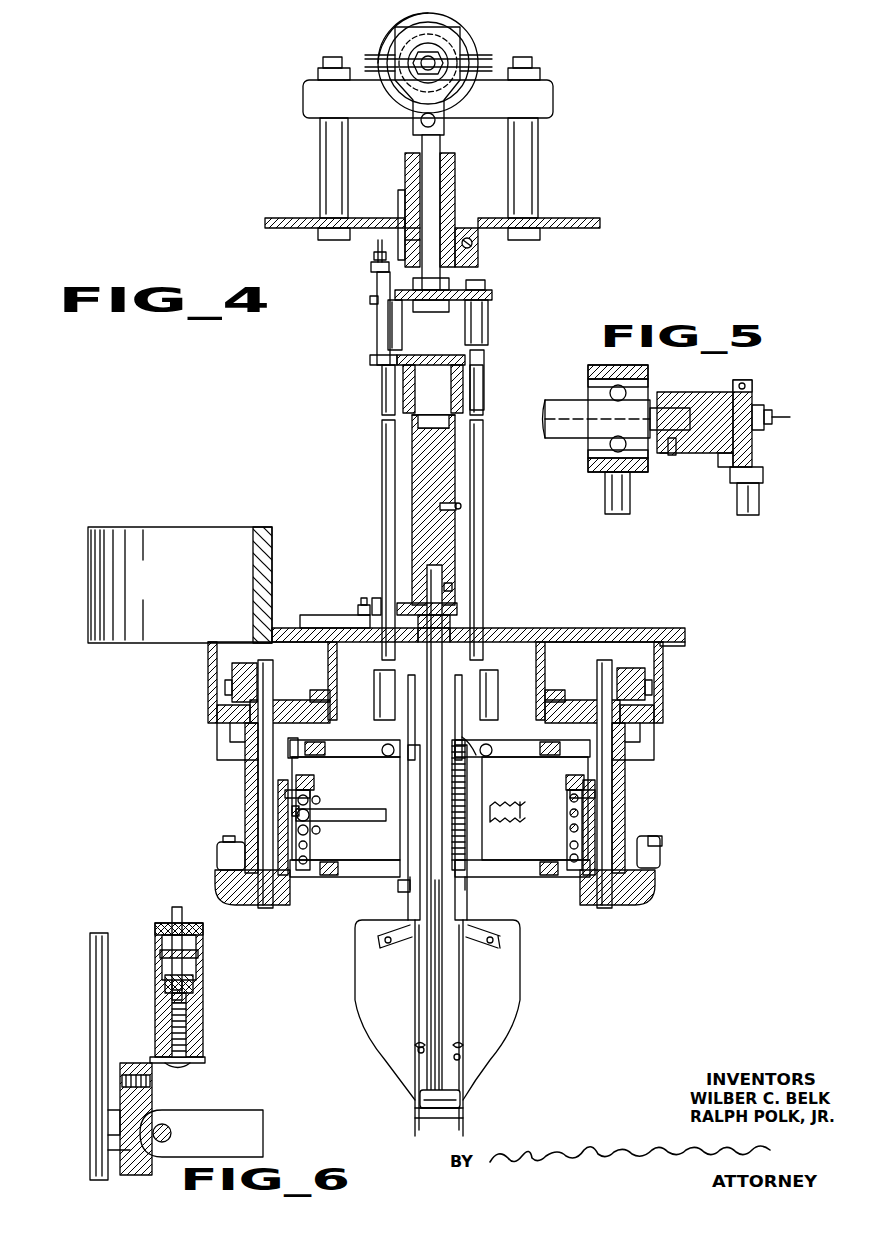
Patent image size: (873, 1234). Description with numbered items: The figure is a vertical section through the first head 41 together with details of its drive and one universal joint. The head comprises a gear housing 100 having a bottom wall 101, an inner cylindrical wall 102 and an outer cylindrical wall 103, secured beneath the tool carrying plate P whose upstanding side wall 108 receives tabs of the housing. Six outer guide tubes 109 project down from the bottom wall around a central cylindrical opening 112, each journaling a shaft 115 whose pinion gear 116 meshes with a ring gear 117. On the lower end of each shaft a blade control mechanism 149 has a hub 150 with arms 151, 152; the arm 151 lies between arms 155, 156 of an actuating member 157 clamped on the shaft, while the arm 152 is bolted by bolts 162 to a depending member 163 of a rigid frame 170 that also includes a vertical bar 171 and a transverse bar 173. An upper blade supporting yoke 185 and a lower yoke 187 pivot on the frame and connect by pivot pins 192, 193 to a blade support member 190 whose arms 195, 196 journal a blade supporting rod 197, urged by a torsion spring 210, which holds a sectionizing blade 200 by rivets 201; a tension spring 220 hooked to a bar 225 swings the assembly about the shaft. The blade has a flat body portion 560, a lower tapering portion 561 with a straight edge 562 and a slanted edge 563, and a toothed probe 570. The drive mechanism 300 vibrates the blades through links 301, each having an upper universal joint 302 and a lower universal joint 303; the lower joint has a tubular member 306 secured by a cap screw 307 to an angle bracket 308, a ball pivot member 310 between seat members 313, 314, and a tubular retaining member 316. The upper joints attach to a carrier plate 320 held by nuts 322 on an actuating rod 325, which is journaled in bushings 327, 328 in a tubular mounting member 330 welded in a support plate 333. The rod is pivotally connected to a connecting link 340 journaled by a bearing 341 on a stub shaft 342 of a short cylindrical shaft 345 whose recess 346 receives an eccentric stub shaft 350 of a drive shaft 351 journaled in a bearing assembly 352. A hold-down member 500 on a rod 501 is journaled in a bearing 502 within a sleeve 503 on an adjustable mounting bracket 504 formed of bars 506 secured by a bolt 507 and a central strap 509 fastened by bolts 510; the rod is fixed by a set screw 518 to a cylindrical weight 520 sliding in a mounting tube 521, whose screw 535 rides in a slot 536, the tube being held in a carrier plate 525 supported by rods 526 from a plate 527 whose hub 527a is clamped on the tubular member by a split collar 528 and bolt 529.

In FIG. 4, the drive mechanism 300 is at (470, 46).
In FIG. 5, the drive mechanism 300 is at (668, 390).
In FIG. 4, the bearing 341 is at (415, 80).
In FIG. 5, the bearing 341 is at (756, 408).
In FIG. 4, the bearing assembly 352 is at (368, 38).
In FIG. 5, the bearing assembly 352 is at (612, 370).
In FIG. 4, the connecting link 340 is at (446, 101).
In FIG. 5, the connecting link 340 is at (754, 453).
In FIG. 4, the support plate 333 is at (278, 220).
In FIG. 4, the actuating rod 325 is at (441, 172).
In FIG. 5, the actuating rod 325 is at (762, 500).
In FIG. 4, the bushing 327 is at (412, 170).
In FIG. 4, the tubular mounting member 330 is at (404, 192).
In FIG. 4, the bushing 328 is at (410, 240).
In FIG. 4, the split collar 528 is at (480, 262).
In FIG. 4, the bolt 529 is at (475, 245).
In FIG. 4, the hub 527a is at (374, 257).
In FIG. 4, the plate 527 is at (371, 268).
In FIG. 4, the carrier plate 320 is at (493, 294).
In FIG. 4, the nuts 322 is at (370, 298).
In FIG. 4, the rods 526 is at (377, 326).
In FIG. 4, the universal joint 302 is at (388, 314).
In FIG. 4, the carrier plate 525 is at (372, 360).
In FIG. 4, the slot 536 is at (455, 440).
In FIG. 4, the link 301 is at (382, 488).
In FIG. 6, the link 301 is at (172, 914).
In FIG. 4, the mounting tube 521 is at (412, 440).
In FIG. 4, the cylindrical weight 520 is at (448, 530).
In FIG. 4, the screw 535 is at (460, 506).
In FIG. 4, the universal joint 303 is at (425, 672).
In FIG. 6, the universal joint 303 is at (203, 972).
In FIG. 4, the set screw 518 is at (452, 588).
In FIG. 4, the central strap 509 is at (458, 610).
In FIG. 4, the sleeve 503 is at (452, 622).
In FIG. 4, the bearing 502 is at (452, 636).
In FIG. 4, the bars 506 is at (342, 620).
In FIG. 4, the bolt 507 is at (364, 606).
In FIG. 4, the bolts 510 is at (364, 598).
In FIG. 4, the adjustable mounting bracket 504 is at (376, 596).
In FIG. 4, the upstanding side wall 108 is at (196, 576).
In FIG. 4, the tool carrying plate P is at (682, 630).
In FIG. 4, the gear housing 100 is at (206, 687).
In FIG. 4, the outer cylindrical wall 103 is at (212, 700).
In FIG. 4, the pinion gear 116 is at (240, 673).
In FIG. 4, the inner cylindrical wall 102 is at (333, 676).
In FIG. 4, the ring gear 117 is at (330, 694).
In FIG. 4, the pivot pin 192 is at (410, 700).
In FIG. 6, the pivot pin 192 is at (168, 1125).
In FIG. 4, the blade supporting rod 197 is at (405, 716).
In FIG. 6, the blade supporting rod 197 is at (90, 1077).
In FIG. 4, the shaft 115 is at (266, 664).
In FIG. 4, the outer guide tube 109 is at (246, 752).
In FIG. 4, the bottom wall 101 is at (238, 732).
In FIG. 4, the hub 150 is at (278, 830).
In FIG. 4, the blade control mechanism 149 is at (242, 820).
In FIG. 4, the actuating member 157 is at (258, 900).
In FIG. 4, the arm 151 is at (224, 858).
In FIG. 4, the arm 155 is at (230, 842).
In FIG. 4, the arm 156 is at (662, 843).
In FIG. 4, the upper blade supporting yoke 185 is at (370, 765).
In FIG. 6, the upper blade supporting yoke 185 is at (262, 1106).
In FIG. 4, the lower yoke 187 is at (352, 875).
In FIG. 4, the vertical bar 171 is at (300, 748).
In FIG. 4, the blade support member 190 is at (395, 850).
In FIG. 6, the blade support member 190 is at (108, 1156).
In FIG. 4, the transverse bar 173 is at (296, 781).
In FIG. 4, the depending member 163 is at (300, 797).
In FIG. 4, the rigid frame 170 is at (320, 777).
In FIG. 4, the arm 195 is at (322, 792).
In FIG. 6, the arm 195 is at (120, 1098).
In FIG. 4, the arm 152 is at (322, 808).
In FIG. 4, the bar 225 is at (358, 822).
In FIG. 4, the tension spring 220 is at (322, 818).
In FIG. 4, the torsion spring 210 is at (465, 788).
In FIG. 4, the bolts 162 is at (310, 840).
In FIG. 4, the central cylindrical opening 112 is at (480, 748).
In FIG. 4, the pivot pin 193 is at (407, 880).
In FIG. 4, the arm 196 is at (404, 892).
In FIG. 4, the first head 41 is at (701, 681).
In FIG. 4, the rivets 201 is at (400, 940).
In FIG. 4, the flat body portion 560 is at (356, 970).
In FIG. 4, the sectionizing blade 200 is at (402, 993).
In FIG. 4, the rod 501 is at (442, 997).
In FIG. 4, the lower tapering portion 561 is at (395, 1040).
In FIG. 4, the straight edge 562 is at (418, 1050).
In FIG. 4, the slanted edge 563 is at (400, 1070).
In FIG. 4, the hold-down member 500 is at (460, 1100).
In FIG. 4, the toothed probe 570 is at (415, 1117).
In FIG. 5, the drive shaft 351 is at (562, 402).
In FIG. 5, the stub shaft 342 is at (770, 414).
In FIG. 5, the short cylindrical shaft 345 is at (722, 470).
In FIG. 5, the recess 346 is at (700, 470).
In FIG. 5, the eccentric stub shaft 350 is at (670, 458).
In FIG. 6, the tubular member 306 is at (200, 1020).
In FIG. 6, the tubular retaining member 316 is at (200, 938).
In FIG. 6, the seat member 313 is at (198, 956).
In FIG. 6, the ball pivot member 310 is at (193, 986).
In FIG. 6, the seat member 314 is at (186, 1000).
In FIG. 6, the angle bracket 308 is at (205, 1060).
In FIG. 6, the cap screw 307 is at (190, 1070).